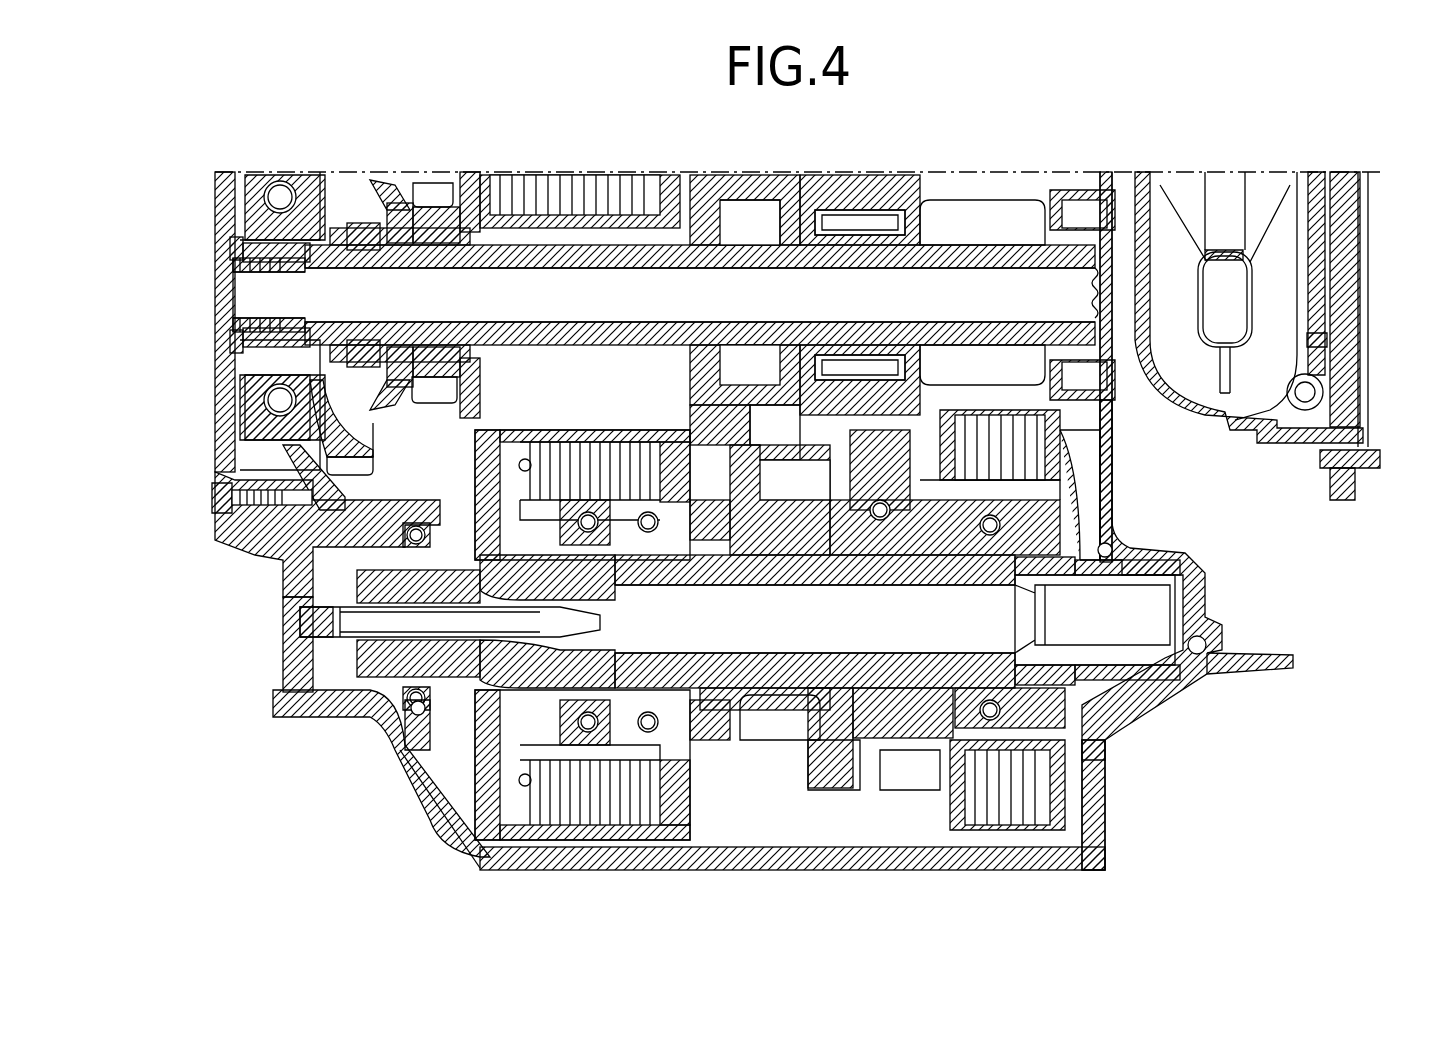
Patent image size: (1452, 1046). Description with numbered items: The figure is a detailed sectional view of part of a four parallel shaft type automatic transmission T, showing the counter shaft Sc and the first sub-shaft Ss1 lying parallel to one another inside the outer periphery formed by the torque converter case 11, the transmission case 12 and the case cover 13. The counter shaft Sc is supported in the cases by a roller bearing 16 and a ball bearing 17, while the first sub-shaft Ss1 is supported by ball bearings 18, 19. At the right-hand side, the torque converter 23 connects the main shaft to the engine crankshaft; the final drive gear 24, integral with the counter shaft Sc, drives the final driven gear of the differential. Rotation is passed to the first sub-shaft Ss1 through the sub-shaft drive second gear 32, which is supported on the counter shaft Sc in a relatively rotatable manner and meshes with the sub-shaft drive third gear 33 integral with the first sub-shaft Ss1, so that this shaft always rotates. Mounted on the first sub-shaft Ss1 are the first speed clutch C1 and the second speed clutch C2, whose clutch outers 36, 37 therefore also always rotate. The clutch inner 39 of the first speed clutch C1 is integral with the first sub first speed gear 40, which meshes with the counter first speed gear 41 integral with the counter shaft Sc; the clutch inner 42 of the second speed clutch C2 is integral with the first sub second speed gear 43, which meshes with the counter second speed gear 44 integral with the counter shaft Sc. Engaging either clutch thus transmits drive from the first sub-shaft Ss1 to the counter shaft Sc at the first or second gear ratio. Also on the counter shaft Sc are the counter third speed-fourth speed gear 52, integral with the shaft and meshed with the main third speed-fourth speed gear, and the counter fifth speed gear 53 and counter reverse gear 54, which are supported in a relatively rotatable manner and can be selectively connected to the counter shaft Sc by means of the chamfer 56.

The torque converter case 11 is at (1095, 850).
The transmission case 12 is at (880, 868).
The case cover 13 is at (215, 325).
The roller bearing 16 is at (1085, 205).
The ball bearing 17 is at (280, 185).
The ball bearing 18 is at (1105, 515).
The ball bearing 19 is at (410, 745).
The torque converter 23 is at (1217, 440).
The final drive gear 24 is at (1000, 215).
The sub-shaft drive second gear 32 is at (835, 175).
The sub-shaft drive third gear 33 is at (843, 792).
The clutch outer 36 is at (515, 430).
The clutch outer 37 is at (1000, 410).
The clutch inner 39 is at (600, 580).
The first sub first speed gear 40 is at (783, 740).
The counter first speed gear 41 is at (780, 175).
The clutch inner 42 is at (1030, 500).
The first sub second speed gear 43 is at (905, 765).
The counter second speed gear 44 is at (910, 175).
The counter third speed-fourth speed gear 52 is at (735, 430).
The counter fifth speed gear 53 is at (440, 403).
The counter reverse gear 54 is at (360, 470).
The chamfer 56 is at (378, 195).
The counter shaft Sc is at (925, 308).
The first sub-shaft Ss1 is at (875, 633).
The automatic transmission T is at (370, 742).
The first speed clutch C1 is at (612, 845).
The second speed clutch C2 is at (1000, 835).